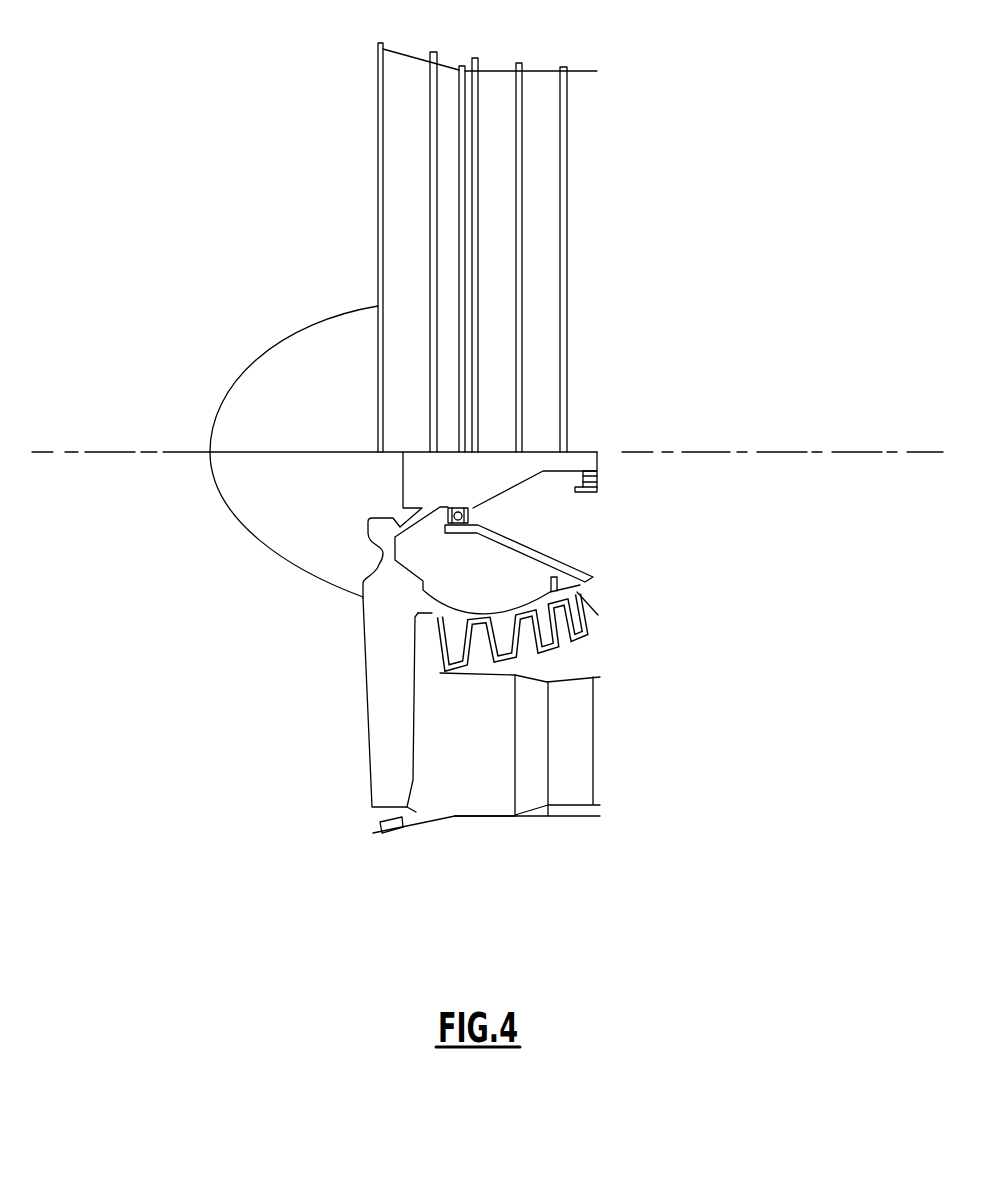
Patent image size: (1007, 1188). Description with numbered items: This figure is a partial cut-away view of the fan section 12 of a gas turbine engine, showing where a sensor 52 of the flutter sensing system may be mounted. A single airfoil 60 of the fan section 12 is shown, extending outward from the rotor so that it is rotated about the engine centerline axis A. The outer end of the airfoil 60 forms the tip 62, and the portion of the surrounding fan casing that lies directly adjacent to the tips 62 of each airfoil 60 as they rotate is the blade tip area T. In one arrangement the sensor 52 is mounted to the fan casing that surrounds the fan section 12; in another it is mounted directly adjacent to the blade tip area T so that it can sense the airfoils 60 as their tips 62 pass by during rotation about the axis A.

The fan section 12 is at (312, 298).
The engine centerline axis A is at (72, 455).
The sensor 52 is at (377, 836).
The airfoil 60 is at (387, 692).
The tips 62 is at (366, 818).
The blade tip area T is at (418, 808).